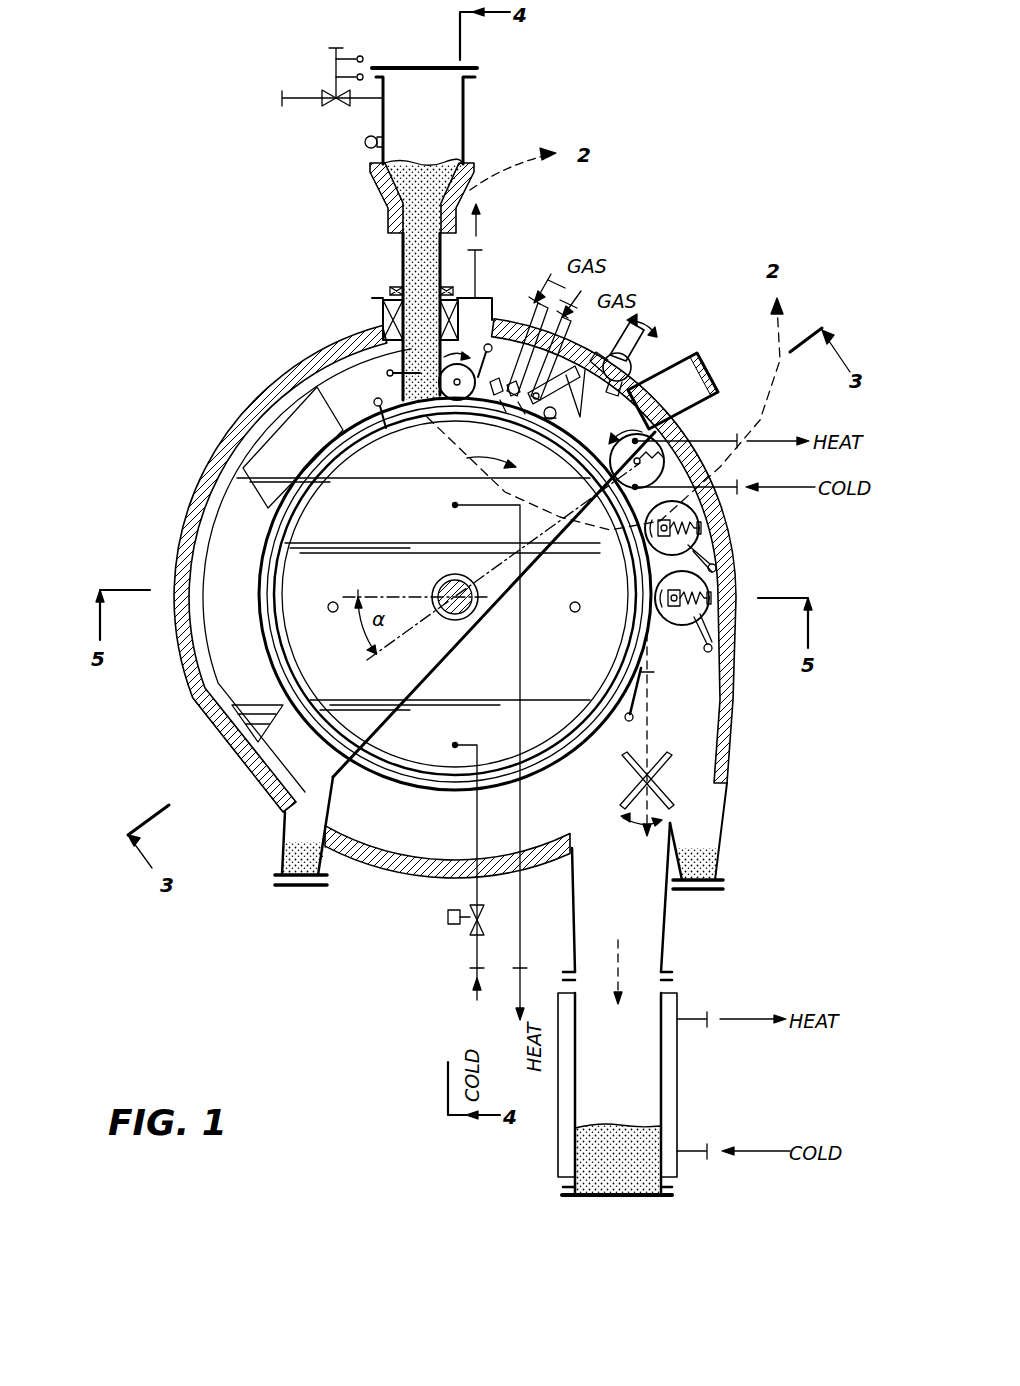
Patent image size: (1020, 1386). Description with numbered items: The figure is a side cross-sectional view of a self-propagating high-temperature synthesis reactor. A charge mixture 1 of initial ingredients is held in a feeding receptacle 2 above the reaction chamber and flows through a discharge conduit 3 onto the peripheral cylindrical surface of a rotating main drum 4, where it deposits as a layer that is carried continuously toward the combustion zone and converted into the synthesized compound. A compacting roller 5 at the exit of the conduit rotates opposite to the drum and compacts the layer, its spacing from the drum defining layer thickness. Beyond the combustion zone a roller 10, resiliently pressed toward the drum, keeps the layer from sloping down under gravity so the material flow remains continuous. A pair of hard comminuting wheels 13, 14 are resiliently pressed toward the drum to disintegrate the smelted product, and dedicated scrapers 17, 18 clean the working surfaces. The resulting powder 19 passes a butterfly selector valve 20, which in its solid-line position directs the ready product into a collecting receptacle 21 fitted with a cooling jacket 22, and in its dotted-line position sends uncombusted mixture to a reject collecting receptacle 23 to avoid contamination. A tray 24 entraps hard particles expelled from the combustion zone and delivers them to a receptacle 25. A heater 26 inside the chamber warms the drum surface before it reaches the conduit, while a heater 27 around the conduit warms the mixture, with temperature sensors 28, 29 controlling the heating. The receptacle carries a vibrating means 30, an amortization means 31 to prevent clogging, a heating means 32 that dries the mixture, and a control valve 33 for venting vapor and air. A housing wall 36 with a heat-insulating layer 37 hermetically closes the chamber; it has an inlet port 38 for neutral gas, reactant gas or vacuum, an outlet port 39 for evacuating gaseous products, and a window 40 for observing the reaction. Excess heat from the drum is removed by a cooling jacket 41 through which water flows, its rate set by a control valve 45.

The charge mixture 1 is at (415, 160).
The feeding receptacle 2 is at (463, 128).
The discharge conduit 3 is at (372, 340).
The main drum 4 is at (428, 470).
The compacting roller 5 is at (462, 403).
The roller 10 is at (610, 465).
The comminuting wheel 13 is at (700, 548).
The comminuting wheel 14 is at (655, 593).
The scraper 17 is at (717, 568).
The scraper 18 is at (636, 710).
The powder 19 is at (650, 674).
The butterfly selector valve 20 is at (668, 759).
The collecting receptacle 21 is at (661, 1066).
The cooling jacket 22 is at (677, 1105).
The reject collecting receptacle 23 is at (724, 843).
The tray 24 is at (534, 564).
The receptacle 25 is at (283, 840).
The heater 26 is at (222, 507).
The heater 27 is at (383, 310).
The temperature sensor 28 is at (382, 432).
The temperature sensor 29 is at (388, 375).
The vibrating means 30 is at (365, 145).
The amortization means 31 is at (390, 289).
The heating means 32 is at (477, 166).
The control valve 33 is at (326, 107).
The housing wall 36 is at (203, 722).
The heat-insulating layer 37 is at (179, 551).
The inlet port 38 is at (629, 346).
The outlet port 39 is at (476, 268).
The window 40 is at (712, 370).
The cooling jacket 41 is at (390, 520).
The control valve 45 is at (448, 915).